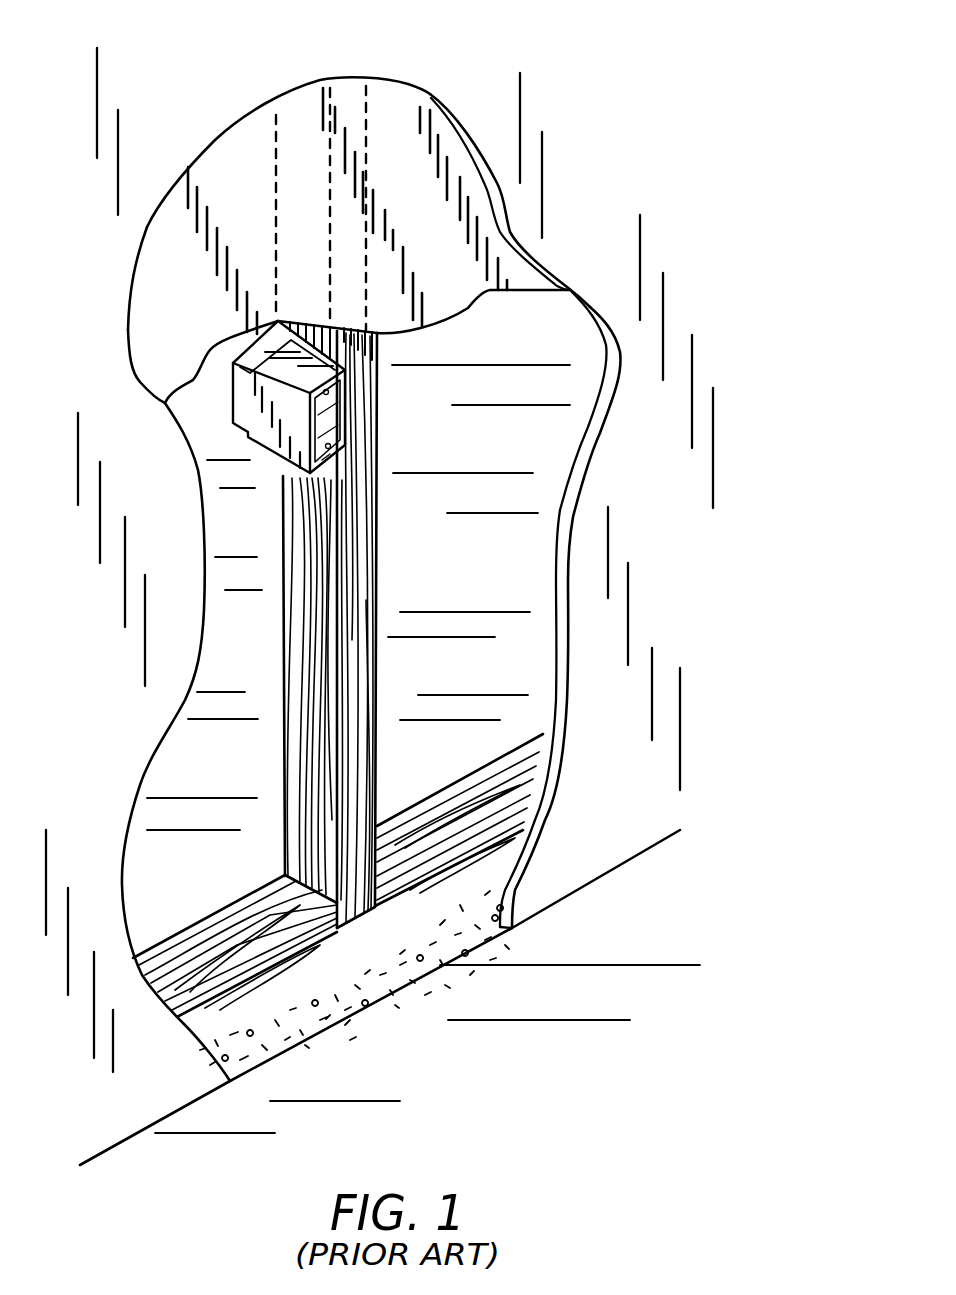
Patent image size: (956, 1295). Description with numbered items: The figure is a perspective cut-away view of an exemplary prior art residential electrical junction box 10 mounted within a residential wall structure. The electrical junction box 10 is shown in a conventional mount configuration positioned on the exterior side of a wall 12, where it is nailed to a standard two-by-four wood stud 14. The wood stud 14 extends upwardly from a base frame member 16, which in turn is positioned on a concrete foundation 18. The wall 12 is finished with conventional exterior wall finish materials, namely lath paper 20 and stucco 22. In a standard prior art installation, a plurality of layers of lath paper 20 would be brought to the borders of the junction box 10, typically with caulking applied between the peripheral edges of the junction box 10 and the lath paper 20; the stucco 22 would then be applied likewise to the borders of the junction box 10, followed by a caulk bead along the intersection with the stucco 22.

The electrical junction box 10 is at (233, 410).
The wall 12 is at (691, 553).
The wood stud 14 is at (360, 570).
The base frame member 16 is at (437, 795).
The concrete foundation 18 is at (370, 985).
The lath paper 20 is at (390, 100).
The stucco 22 is at (595, 449).